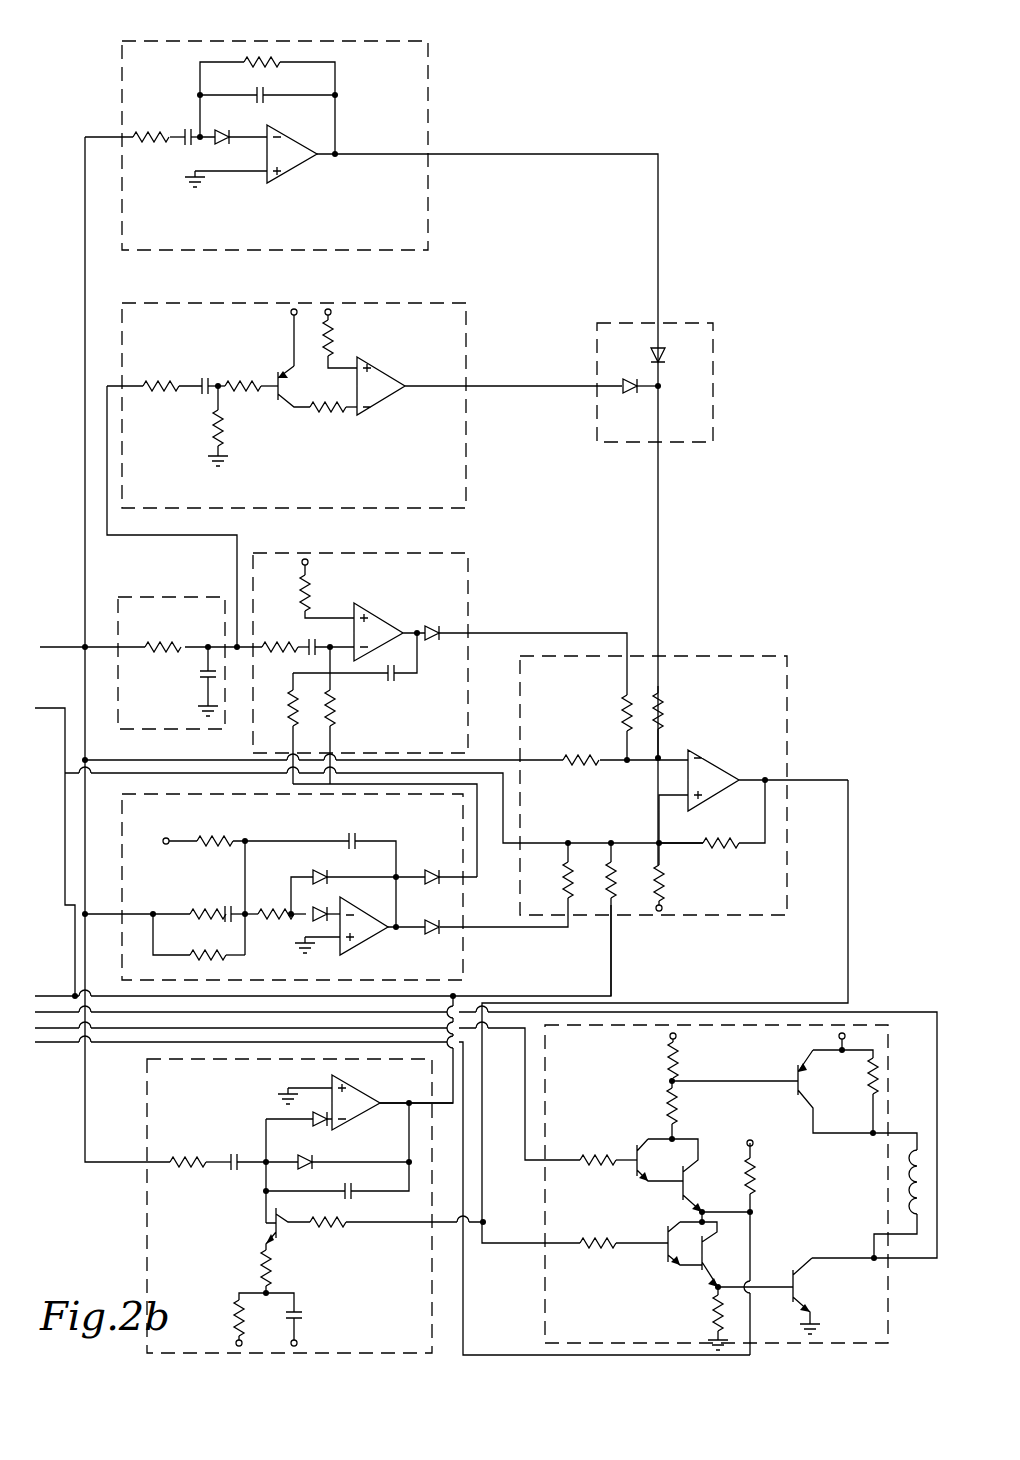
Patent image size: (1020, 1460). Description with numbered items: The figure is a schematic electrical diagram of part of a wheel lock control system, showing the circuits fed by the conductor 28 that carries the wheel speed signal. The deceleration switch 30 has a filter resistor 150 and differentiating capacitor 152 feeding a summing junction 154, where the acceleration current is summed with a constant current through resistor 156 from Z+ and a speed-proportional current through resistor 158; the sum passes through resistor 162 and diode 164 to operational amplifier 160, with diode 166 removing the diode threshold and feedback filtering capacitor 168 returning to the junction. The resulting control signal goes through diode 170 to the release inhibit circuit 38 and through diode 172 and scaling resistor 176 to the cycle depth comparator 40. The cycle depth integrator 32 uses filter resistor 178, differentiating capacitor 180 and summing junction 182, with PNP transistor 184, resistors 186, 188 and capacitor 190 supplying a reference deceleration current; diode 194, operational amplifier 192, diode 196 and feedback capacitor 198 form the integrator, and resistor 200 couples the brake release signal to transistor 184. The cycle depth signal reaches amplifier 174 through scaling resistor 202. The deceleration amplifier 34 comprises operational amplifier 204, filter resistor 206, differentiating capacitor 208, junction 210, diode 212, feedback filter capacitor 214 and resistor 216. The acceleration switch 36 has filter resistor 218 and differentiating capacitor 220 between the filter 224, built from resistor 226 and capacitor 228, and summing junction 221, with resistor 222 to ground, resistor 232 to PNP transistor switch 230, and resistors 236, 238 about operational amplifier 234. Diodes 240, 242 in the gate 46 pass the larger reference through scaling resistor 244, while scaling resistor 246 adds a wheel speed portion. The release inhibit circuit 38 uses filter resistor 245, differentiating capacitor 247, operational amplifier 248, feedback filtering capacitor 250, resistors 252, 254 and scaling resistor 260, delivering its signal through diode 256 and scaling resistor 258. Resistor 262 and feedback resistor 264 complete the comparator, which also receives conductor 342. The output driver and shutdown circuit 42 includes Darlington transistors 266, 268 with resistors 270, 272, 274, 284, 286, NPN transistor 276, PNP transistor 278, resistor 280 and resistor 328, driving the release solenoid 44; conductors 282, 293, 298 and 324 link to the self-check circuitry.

The conductor 28 is at (76, 645).
The deceleration switch 30 is at (463, 948).
The cycle depth integrator 32 is at (147, 1195).
The deceleration amplifier 34 is at (428, 78).
The acceleration switch 36 is at (466, 308).
The release inhibit circuit 38 is at (468, 582).
The cycle depth comparator 40 is at (787, 718).
The output driver and shutdown circuit 42 is at (545, 1280).
The release solenoid 44 is at (902, 1178).
The gate 46 is at (713, 360).
The filter resistor 150 is at (206, 908).
The differentiating capacitor 152 is at (229, 905).
The summing junction 154 is at (273, 905).
The resistor 156 is at (216, 838).
The resistor 158 is at (208, 960).
The operational amplifier 160 is at (372, 938).
The resistor 162 is at (272, 918).
The diode 164 is at (322, 902).
The diode 166 is at (320, 868).
The feedback filtering capacitor 168 is at (360, 838).
The diode 170 is at (430, 870).
The diode 172 is at (430, 920).
The operational amplifier 174 is at (712, 770).
The scaling resistor 176 is at (565, 880).
The filter resistor 178 is at (186, 1157).
The differentiating capacitor 180 is at (234, 1152).
The summing junction 182 is at (262, 1166).
The PNP transistor 184 is at (270, 1225).
The resistor 186 is at (272, 1268).
The resistor 188 is at (235, 1320).
The capacitor 190 is at (300, 1316).
The operational amplifier 192 is at (364, 1098).
The diode 194 is at (320, 1128).
The diode 196 is at (300, 1160).
The feedback capacitor 198 is at (354, 1194).
The resistor 200 is at (330, 1228).
The scaling resistor 202 is at (608, 862).
The operational amplifier 204 is at (305, 165).
The filter resistor 206 is at (138, 135).
The differentiating capacitor 208 is at (186, 132).
The junction 210 is at (200, 142).
The diode 212 is at (222, 130).
The feedback filter capacitor 214 is at (266, 97).
The resistor 216 is at (268, 56).
The filter resistor 218 is at (162, 380).
The differentiating capacitor 220 is at (209, 375).
The summing junction 221 is at (222, 392).
The resistor 222 is at (212, 428).
The filter 224 is at (172, 597).
The resistor 226 is at (186, 652).
The capacitor 228 is at (200, 682).
The PNP transistor switch 230 is at (285, 385).
The resistor 232 is at (246, 380).
The operational amplifier 234 is at (395, 375).
The resistor 236 is at (322, 412).
The resistor 238 is at (338, 348).
The diode 240 is at (665, 348).
The diode 242 is at (630, 394).
The scaling resistor 244 is at (665, 712).
The filter resistor 245 is at (283, 641).
The scaling resistor 246 is at (585, 766).
The differentiating capacitor 247 is at (306, 655).
The operational amplifier 248 is at (382, 626).
The feedback filtering capacitor 250 is at (396, 678).
The resistor 252 is at (315, 596).
The scaling resistor 254 is at (290, 720).
The diode 256 is at (445, 628).
The scaling resistor 258 is at (620, 718).
The scaling resistor 260 is at (336, 722).
The resistor 262 is at (666, 884).
The feedback resistor 264 is at (733, 848).
The Darlington transistor 266 is at (690, 1266).
The Darlington transistor 268 is at (678, 1186).
The resistor 270 is at (682, 1058).
The resistor 272 is at (682, 1106).
The resistor 274 is at (712, 1310).
The NPN transistor 276 is at (812, 1288).
The PNP transistor 278 is at (810, 1082).
The resistor 280 is at (880, 1082).
The conductor 282 is at (58, 1045).
The resistor 284 is at (604, 1152).
The resistor 286 is at (600, 1236).
The conductor 293 is at (76, 996).
The conductor 298 is at (74, 960).
The conductor 324 is at (86, 1045).
The resistor 328 is at (758, 1176).
The conductor 342 is at (64, 705).